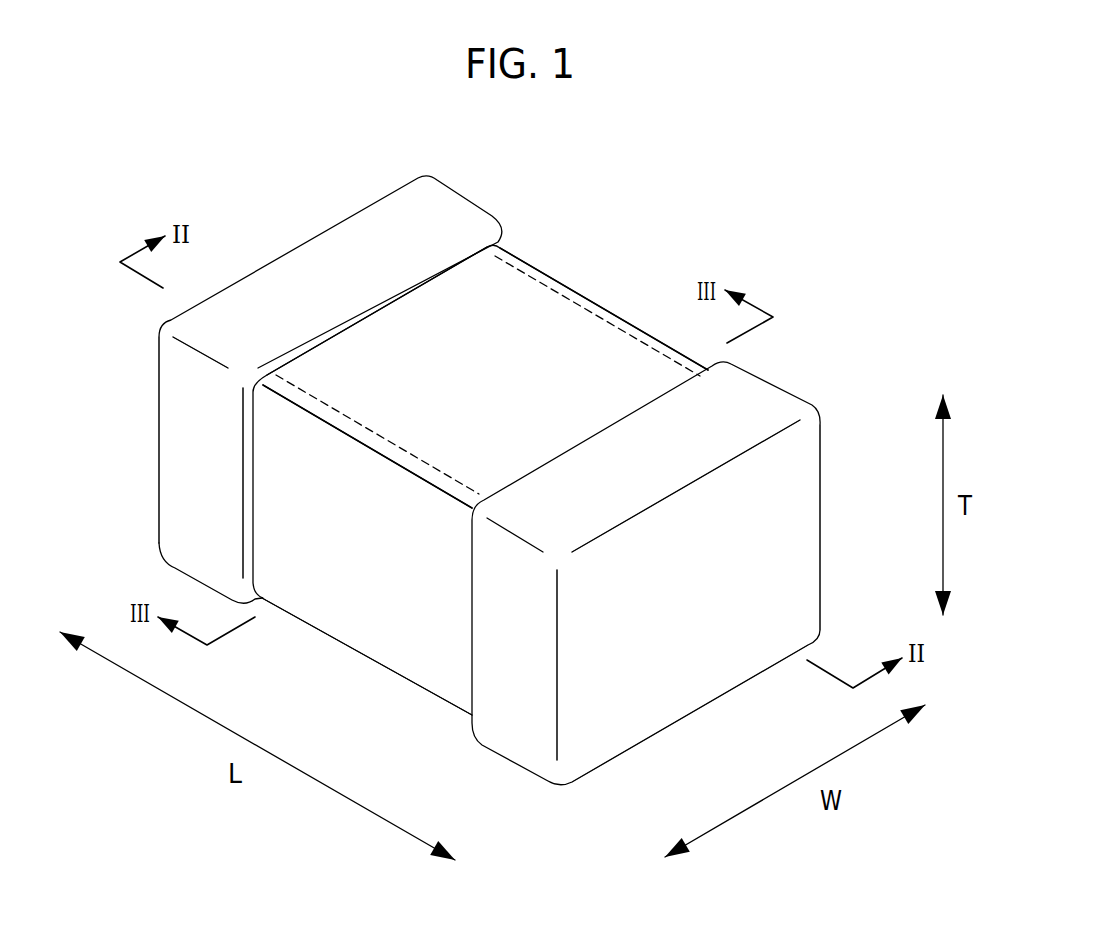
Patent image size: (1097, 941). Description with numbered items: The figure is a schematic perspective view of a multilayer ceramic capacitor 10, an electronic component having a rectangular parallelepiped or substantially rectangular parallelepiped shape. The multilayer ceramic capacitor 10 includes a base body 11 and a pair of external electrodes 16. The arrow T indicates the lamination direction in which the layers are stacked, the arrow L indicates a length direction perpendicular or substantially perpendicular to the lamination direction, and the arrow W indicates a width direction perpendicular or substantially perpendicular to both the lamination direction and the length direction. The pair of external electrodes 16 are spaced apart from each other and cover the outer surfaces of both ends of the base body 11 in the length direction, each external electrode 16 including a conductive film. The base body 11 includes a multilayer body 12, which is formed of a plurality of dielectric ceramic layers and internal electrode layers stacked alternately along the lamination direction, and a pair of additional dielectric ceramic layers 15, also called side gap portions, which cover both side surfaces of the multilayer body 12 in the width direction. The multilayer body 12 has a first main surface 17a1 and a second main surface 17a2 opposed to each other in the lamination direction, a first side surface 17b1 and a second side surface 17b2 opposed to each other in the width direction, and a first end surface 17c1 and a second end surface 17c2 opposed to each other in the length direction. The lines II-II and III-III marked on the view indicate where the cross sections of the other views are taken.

The multilayer ceramic capacitor 10 is at (840, 243).
The base body 11 is at (495, 481).
The multilayer body 12 is at (547, 268).
The additional dielectric ceramic layer 15 is at (603, 300).
The external electrode 16 is at (427, 209).
The first main surface 17a1 is at (523, 373).
The second main surface 17a2 is at (452, 678).
The first side surface 17b1 is at (385, 585).
The second side surface 17b2 is at (613, 343).
The first end surface 17c1 is at (680, 658).
The second end surface 17c2 is at (200, 450).